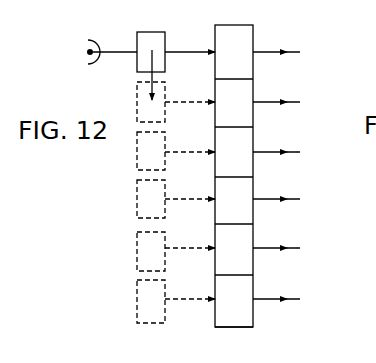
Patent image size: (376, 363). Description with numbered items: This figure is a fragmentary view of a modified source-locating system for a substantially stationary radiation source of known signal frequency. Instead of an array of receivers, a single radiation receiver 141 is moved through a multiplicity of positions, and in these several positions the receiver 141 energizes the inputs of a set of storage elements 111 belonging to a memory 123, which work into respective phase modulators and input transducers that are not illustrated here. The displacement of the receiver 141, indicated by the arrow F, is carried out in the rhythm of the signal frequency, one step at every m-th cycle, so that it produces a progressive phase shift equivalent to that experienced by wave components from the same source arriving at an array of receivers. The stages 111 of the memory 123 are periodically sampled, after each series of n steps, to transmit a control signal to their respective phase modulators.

The radiation receiver 141 is at (137, 40).
The displacement arrow F is at (152, 83).
The storage elements 111 is at (233, 90).
The memory 123 is at (249, 329).